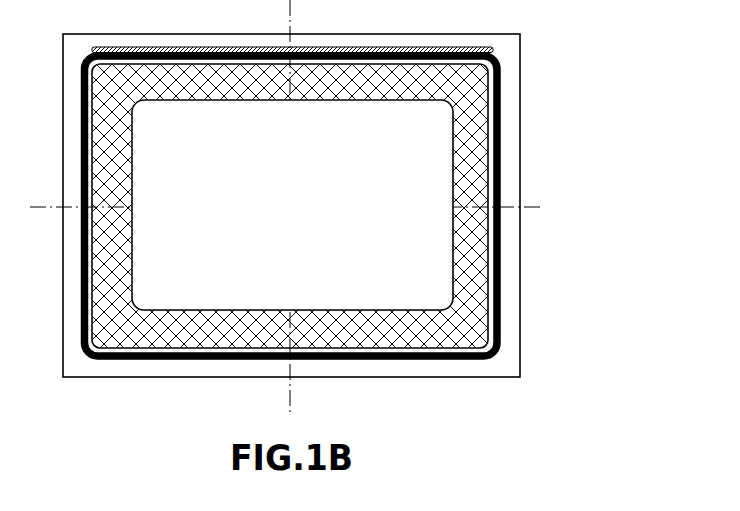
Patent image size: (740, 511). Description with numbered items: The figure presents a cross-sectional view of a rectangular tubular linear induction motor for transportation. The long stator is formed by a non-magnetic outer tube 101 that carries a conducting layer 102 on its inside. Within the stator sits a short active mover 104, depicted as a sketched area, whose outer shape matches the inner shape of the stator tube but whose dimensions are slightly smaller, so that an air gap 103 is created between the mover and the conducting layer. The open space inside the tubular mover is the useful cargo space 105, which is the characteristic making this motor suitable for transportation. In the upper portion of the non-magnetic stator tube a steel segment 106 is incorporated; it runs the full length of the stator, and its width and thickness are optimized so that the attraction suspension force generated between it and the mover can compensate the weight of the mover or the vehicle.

The non-magnetic outer tube 101 is at (513, 99).
The conducting layer 102 is at (503, 147).
The air gap 103 is at (488, 195).
The active mover 104 is at (470, 249).
The cargo space 105 is at (418, 298).
The steel segment 106 is at (487, 50).